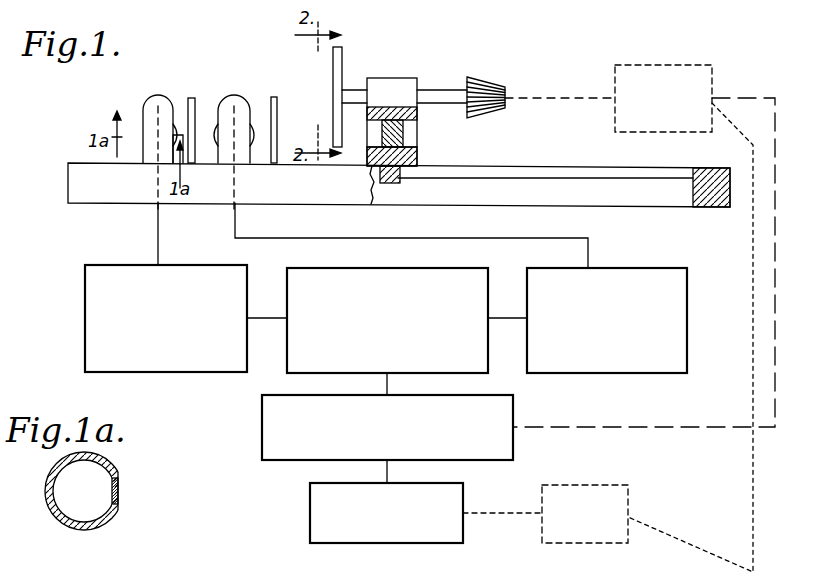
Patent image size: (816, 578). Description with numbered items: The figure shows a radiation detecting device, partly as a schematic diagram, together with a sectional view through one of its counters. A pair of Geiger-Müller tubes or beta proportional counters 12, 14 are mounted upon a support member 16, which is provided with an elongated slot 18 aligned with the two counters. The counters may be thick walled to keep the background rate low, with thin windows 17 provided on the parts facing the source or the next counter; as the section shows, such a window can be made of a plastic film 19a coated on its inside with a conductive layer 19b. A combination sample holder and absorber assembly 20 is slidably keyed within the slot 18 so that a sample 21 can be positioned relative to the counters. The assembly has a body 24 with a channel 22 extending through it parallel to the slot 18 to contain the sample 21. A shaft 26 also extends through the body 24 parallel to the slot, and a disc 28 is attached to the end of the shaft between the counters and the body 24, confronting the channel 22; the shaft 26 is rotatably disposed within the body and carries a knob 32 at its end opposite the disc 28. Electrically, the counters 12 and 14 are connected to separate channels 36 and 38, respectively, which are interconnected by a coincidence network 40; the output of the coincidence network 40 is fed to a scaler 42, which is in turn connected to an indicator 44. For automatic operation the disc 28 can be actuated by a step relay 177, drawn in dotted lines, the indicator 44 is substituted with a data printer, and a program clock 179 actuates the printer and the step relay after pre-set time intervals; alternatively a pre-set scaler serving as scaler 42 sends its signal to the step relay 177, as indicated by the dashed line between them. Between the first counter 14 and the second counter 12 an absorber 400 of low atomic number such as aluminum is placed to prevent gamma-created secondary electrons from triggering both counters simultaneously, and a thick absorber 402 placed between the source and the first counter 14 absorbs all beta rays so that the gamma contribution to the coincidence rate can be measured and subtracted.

In FIG. 1, the Geiger-Müller tube 12 is at (143, 111).
In FIG. 1A, the Geiger-Müller tube 12 is at (56, 513).
In FIG. 1, the Geiger-Müller tube 14 is at (222, 114).
In FIG. 1, the support member 16 is at (82, 172).
In FIG. 1, the thin window 17 is at (176, 124).
In FIG. 1A, the thin window 17 is at (124, 488).
In FIG. 1, the elongated slot 18 is at (504, 169).
In FIG. 1, the sample holder and absorber assembly 20 is at (389, 88).
In FIG. 1, the sample 21 is at (404, 128).
In FIG. 1, the channel 22 is at (412, 123).
In FIG. 1, the body 24 is at (413, 155).
In FIG. 1, the shaft 26 is at (433, 96).
In FIG. 1, the disc 28 is at (333, 73).
In FIG. 1, the knob 32 is at (493, 85).
In FIG. 1, the channel 36 is at (178, 347).
In FIG. 1, the channel 38 is at (619, 347).
In FIG. 1, the coincidence network 40 is at (400, 359).
In FIG. 1, the scaler 42 is at (399, 450).
In FIG. 1, the indicator 44 is at (399, 537).
In FIG. 1, the step relay 177 is at (701, 64).
In FIG. 1, the program clock 179 is at (630, 495).
In FIG. 1, the absorber 400 is at (192, 97).
In FIG. 1, the absorber 402 is at (274, 96).
In FIG. 1A, the plastic film 19a is at (118, 506).
In FIG. 1A, the conductive layer 19b is at (112, 490).